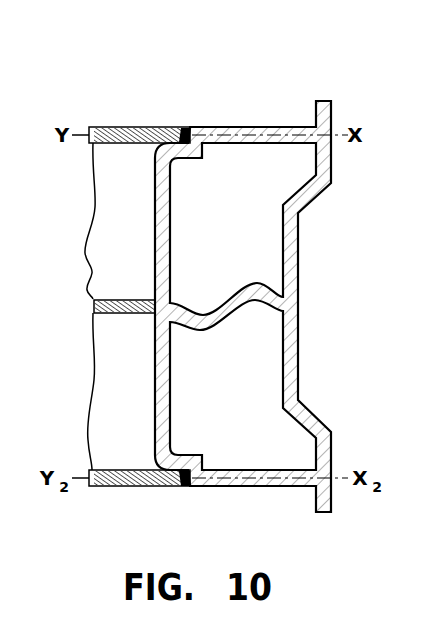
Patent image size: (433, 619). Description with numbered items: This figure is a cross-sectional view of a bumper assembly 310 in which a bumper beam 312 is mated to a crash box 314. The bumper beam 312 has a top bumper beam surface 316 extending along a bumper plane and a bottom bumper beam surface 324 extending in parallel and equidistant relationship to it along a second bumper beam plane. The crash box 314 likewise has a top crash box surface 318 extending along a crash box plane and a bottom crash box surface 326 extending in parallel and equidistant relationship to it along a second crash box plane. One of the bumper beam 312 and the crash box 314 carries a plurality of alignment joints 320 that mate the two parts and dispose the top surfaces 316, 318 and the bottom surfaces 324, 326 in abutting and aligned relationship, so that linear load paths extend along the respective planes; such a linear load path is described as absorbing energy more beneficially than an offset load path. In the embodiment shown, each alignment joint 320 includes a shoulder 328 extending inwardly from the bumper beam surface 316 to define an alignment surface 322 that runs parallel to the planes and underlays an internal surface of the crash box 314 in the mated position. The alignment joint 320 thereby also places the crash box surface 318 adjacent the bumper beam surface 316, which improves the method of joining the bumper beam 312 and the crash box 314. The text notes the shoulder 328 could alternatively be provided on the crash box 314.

The bumper assembly 310 is at (323, 312).
The bumper beam 312 is at (332, 160).
The crash box 314 is at (84, 128).
The top bumper beam surface 316 is at (270, 126).
The top crash box surface 318 is at (97, 128).
The alignment joint 320 is at (184, 129).
The alignment surface 322 is at (143, 128).
The bottom bumper beam surface 324 is at (255, 487).
The bottom crash box surface 326 is at (100, 487).
The shoulder 328 is at (181, 156).